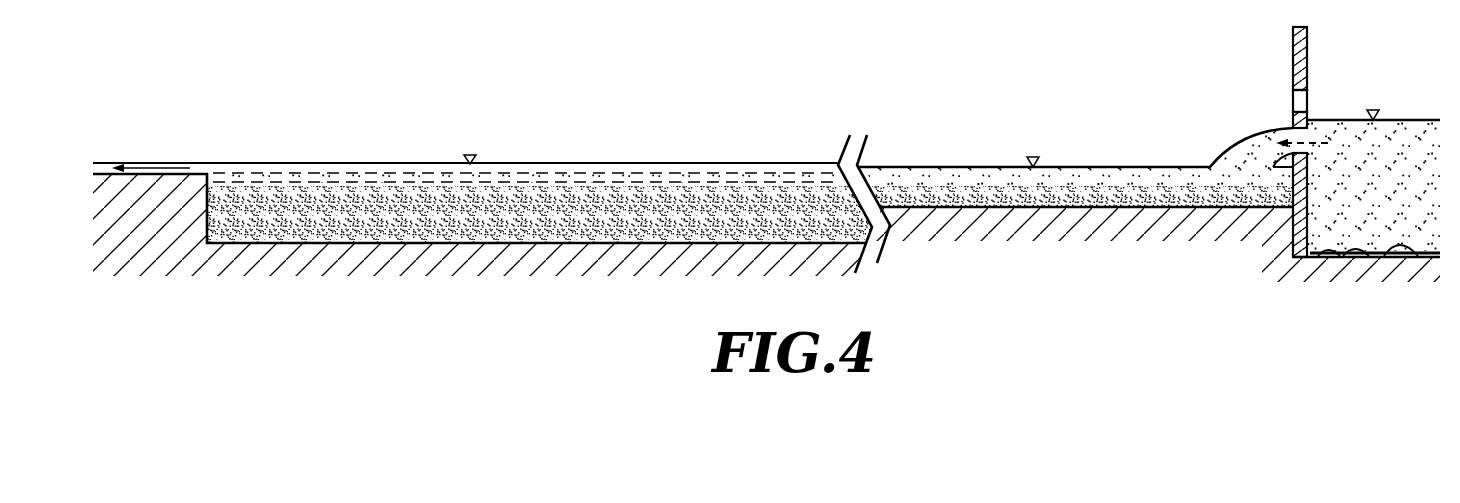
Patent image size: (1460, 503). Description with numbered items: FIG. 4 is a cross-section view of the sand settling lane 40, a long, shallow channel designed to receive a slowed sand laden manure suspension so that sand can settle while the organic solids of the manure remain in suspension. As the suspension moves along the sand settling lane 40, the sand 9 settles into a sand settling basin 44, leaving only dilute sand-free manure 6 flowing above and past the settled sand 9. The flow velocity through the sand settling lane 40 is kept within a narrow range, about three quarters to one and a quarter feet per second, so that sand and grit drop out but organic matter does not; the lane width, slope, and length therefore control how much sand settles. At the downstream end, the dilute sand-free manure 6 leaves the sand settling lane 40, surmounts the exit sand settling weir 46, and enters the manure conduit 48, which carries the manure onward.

The manure conduit 48 is at (150, 173).
The exit sand settling weir 46 is at (169, 238).
The sand 9 is at (332, 234).
The sand settling basin 44 is at (637, 226).
The sand settling lane 40 is at (1050, 103).
The dilute sand-free manure 6 is at (1125, 172).